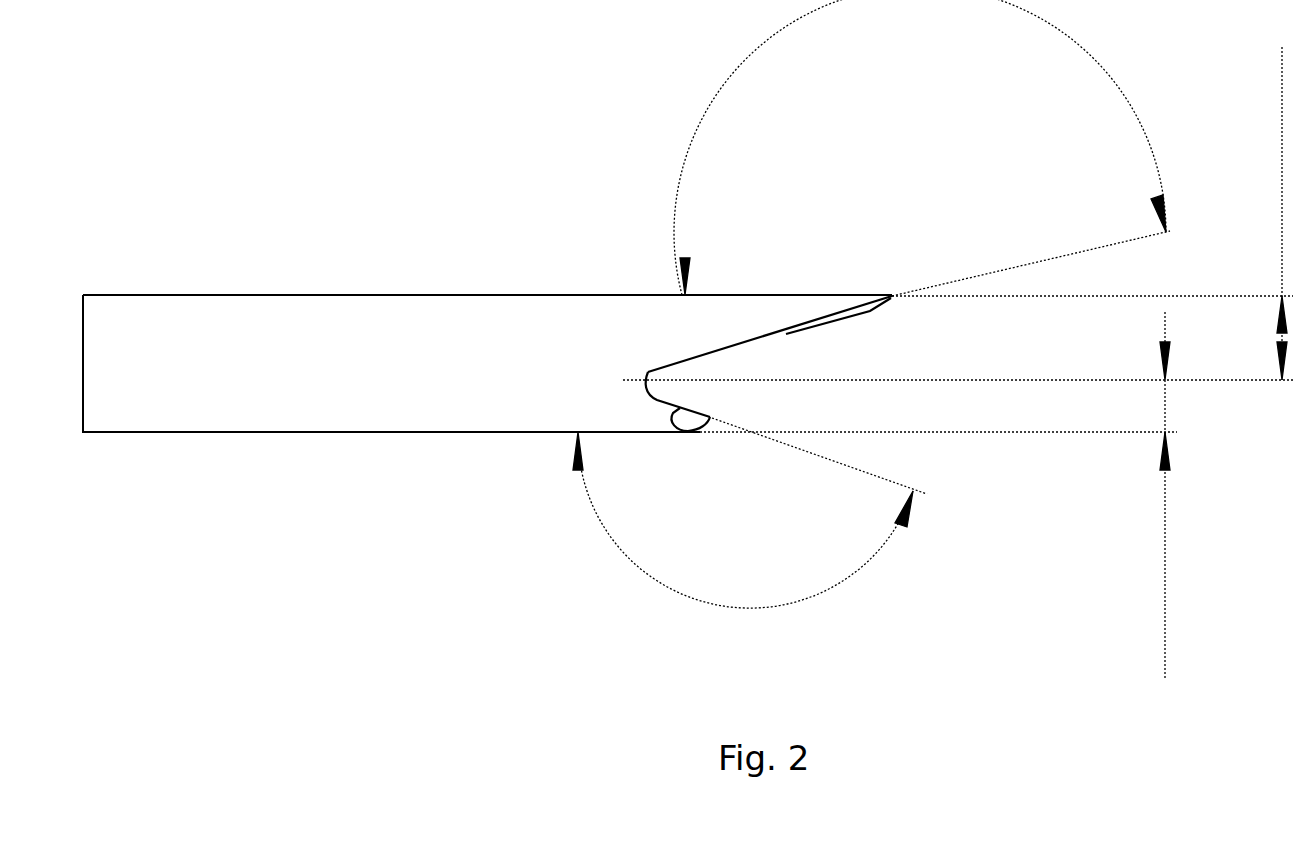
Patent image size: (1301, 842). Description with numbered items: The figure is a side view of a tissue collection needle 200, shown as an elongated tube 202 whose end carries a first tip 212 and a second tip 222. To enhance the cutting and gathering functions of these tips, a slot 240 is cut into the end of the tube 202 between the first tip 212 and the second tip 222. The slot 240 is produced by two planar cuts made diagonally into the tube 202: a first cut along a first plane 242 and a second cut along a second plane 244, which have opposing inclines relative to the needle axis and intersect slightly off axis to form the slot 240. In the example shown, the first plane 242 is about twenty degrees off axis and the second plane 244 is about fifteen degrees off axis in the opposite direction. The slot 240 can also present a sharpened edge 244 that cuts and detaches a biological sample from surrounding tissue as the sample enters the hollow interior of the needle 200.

The needle 200 is at (440, 208).
The tube 202 is at (413, 295).
The first tip 212 is at (882, 295).
The second tip 222 is at (713, 420).
The slot 240 is at (647, 373).
The first plane 242 is at (1040, 260).
The second plane 244 is at (683, 359).